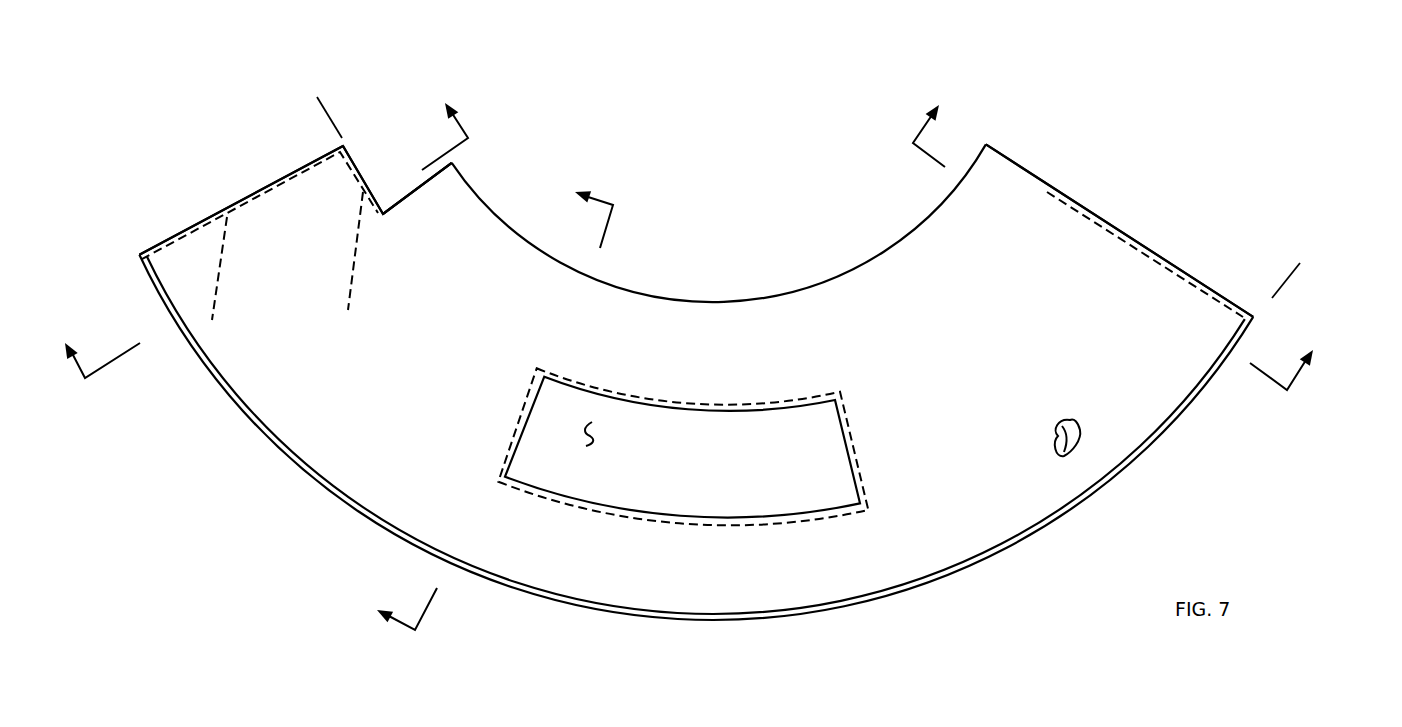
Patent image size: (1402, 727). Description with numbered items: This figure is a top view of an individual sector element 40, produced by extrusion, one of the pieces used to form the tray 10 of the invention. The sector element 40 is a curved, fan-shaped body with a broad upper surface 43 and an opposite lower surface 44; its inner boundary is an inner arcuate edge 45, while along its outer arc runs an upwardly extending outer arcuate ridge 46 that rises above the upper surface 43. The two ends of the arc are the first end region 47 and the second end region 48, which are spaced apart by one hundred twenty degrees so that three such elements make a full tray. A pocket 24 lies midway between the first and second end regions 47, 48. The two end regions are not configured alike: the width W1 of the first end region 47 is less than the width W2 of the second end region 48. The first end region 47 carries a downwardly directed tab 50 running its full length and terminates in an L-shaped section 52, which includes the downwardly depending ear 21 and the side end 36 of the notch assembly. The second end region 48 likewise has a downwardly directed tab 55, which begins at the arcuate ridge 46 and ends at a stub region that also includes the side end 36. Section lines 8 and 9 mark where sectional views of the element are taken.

The sector element 40 is at (1165, 143).
The broad upper surface 43 is at (973, 528).
The inner arcuate edge 45 is at (703, 298).
The outer arcuate ridge 46 is at (860, 603).
The first end region 47 is at (132, 212).
The second end region 48 is at (1005, 129).
The width of first end region W1 is at (343, 98).
The width of second end region W2 is at (1272, 300).
The L-shaped section 52 is at (417, 120).
The side end of notch assembly 36 is at (428, 180).
The downwardly depending ear 21 is at (362, 259).
The downwardly directed tab 50 is at (210, 337).
The downwardly directed tab 55 is at (1147, 255).
The pocket 24 is at (728, 515).
The lower surface 44 is at (1072, 423).
The section line 8- 8 is at (1110, 250).
The section line 9- 9 is at (501, 416).
The tray 10 is at (272, 244).